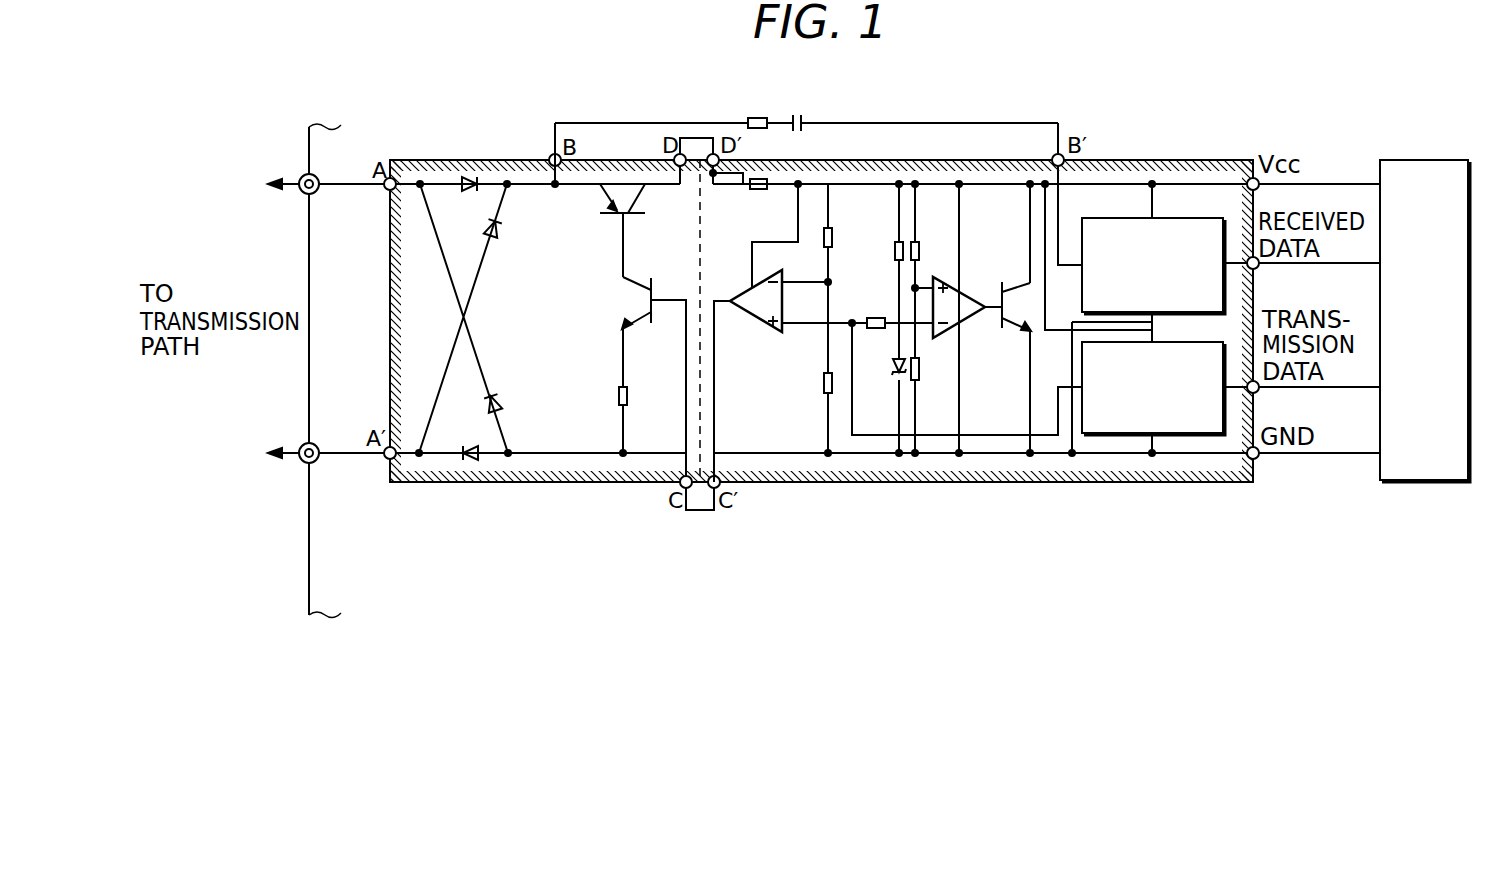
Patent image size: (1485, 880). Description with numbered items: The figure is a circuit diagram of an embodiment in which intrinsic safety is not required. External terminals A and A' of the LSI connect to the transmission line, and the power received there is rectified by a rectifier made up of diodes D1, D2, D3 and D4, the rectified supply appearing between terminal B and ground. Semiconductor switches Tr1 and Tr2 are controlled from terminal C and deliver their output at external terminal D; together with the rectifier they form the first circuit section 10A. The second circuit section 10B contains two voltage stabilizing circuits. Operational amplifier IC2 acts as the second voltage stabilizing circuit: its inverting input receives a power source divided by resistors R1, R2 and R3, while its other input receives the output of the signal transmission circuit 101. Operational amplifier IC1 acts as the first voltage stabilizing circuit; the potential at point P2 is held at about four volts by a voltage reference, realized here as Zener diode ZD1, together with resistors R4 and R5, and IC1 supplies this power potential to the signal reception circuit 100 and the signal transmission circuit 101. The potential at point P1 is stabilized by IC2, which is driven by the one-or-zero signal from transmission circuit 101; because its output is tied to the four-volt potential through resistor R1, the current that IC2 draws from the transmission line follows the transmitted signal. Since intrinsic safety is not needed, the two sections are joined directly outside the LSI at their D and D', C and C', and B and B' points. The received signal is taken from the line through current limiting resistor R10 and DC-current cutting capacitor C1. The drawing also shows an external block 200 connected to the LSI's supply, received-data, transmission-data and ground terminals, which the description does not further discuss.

The first circuit section 10A is at (490, 329).
The second circuit section 10B is at (887, 482).
The signal reception circuit 100 is at (1167, 212).
The signal transmission circuit 101 is at (1167, 339).
The logic circuit and CPU 200 is at (1408, 152).
The element LSI is at (1205, 482).
The rectifier diode D1 is at (471, 176).
The rectifier diode D2 is at (511, 237).
The rectifier diode D3 is at (511, 404).
The rectifier diode D4 is at (470, 440).
The semiconductor switch Tr1 is at (628, 198).
The semiconductor switch Tr2 is at (634, 379).
The resistor R1 is at (762, 198).
The resistor R2 is at (845, 241).
The resistor R3 is at (811, 384).
The resistor R4 is at (923, 252).
The resistor R5 is at (931, 371).
The current limiting resistor R10 is at (761, 108).
The DC-current cutting capacitor C1 is at (813, 109).
The Zener diode ZD1 is at (880, 369).
The operational amplifier (first voltage stabilizing circuit) IC1 is at (969, 294).
The operational amplifier (second voltage stabilizing circuit) IC2 is at (748, 318).
The point P1 is at (930, 183).
The point P2 is at (735, 182).